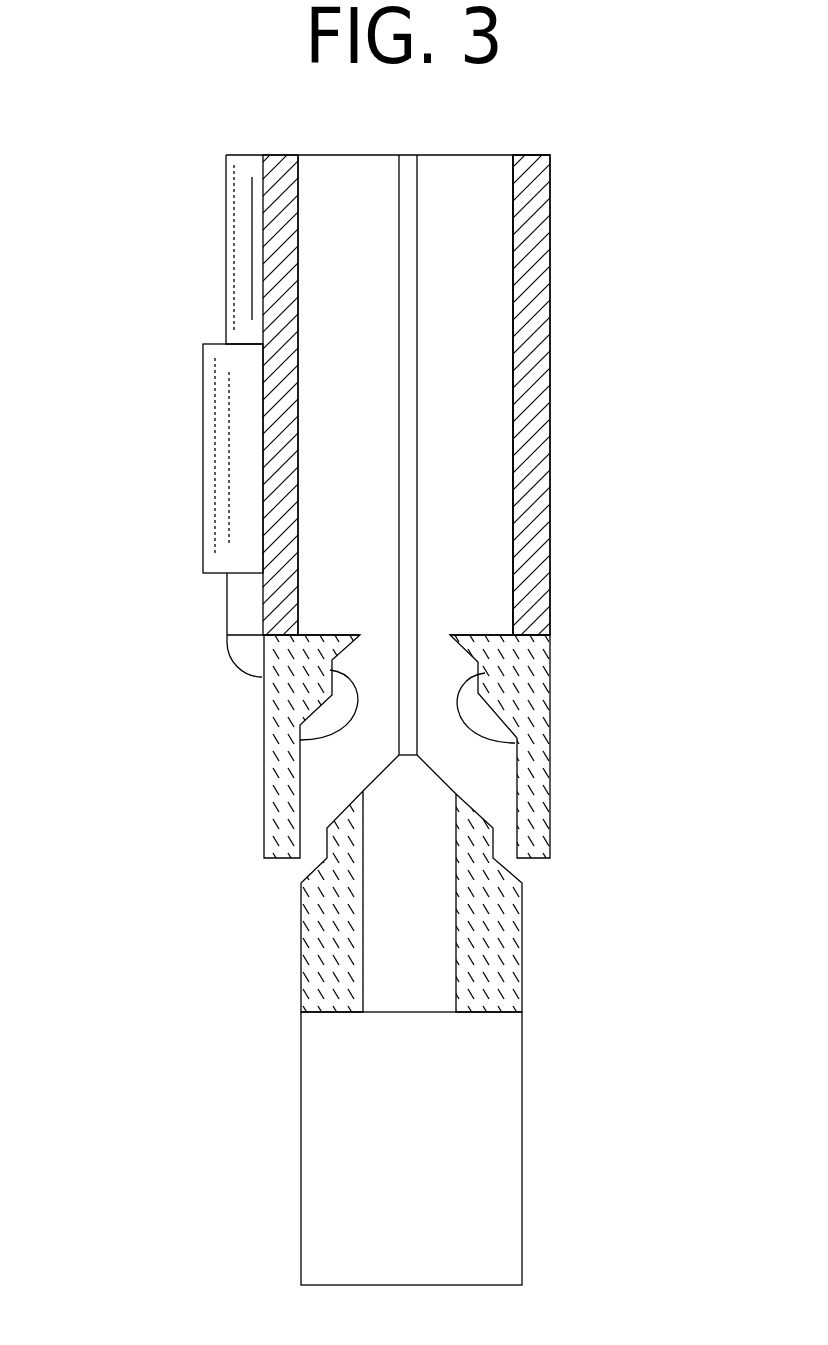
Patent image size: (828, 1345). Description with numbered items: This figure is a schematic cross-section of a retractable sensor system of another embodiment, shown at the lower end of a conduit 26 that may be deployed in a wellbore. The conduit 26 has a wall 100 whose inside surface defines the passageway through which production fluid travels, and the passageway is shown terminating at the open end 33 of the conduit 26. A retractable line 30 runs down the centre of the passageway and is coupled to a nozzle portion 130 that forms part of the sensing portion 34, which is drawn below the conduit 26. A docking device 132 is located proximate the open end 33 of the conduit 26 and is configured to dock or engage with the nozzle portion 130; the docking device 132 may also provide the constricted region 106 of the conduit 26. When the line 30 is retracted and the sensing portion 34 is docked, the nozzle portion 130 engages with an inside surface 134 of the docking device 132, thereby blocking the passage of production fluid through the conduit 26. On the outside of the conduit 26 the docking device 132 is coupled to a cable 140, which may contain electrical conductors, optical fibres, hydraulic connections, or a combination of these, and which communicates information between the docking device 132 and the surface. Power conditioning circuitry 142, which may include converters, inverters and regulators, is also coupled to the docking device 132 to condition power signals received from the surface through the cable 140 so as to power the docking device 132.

The wall 100 is at (543, 210).
The conduit 26 is at (549, 390).
The line 30 is at (417, 343).
The constricted region 106 is at (433, 640).
The cable 140 is at (225, 237).
The power conditioning circuitry 142 is at (229, 435).
The open end 33 is at (550, 635).
The docking device 132 is at (550, 665).
The inside surface 134 is at (517, 738).
The nozzle portion 130 is at (520, 888).
The sensing portion 34 is at (254, 1073).